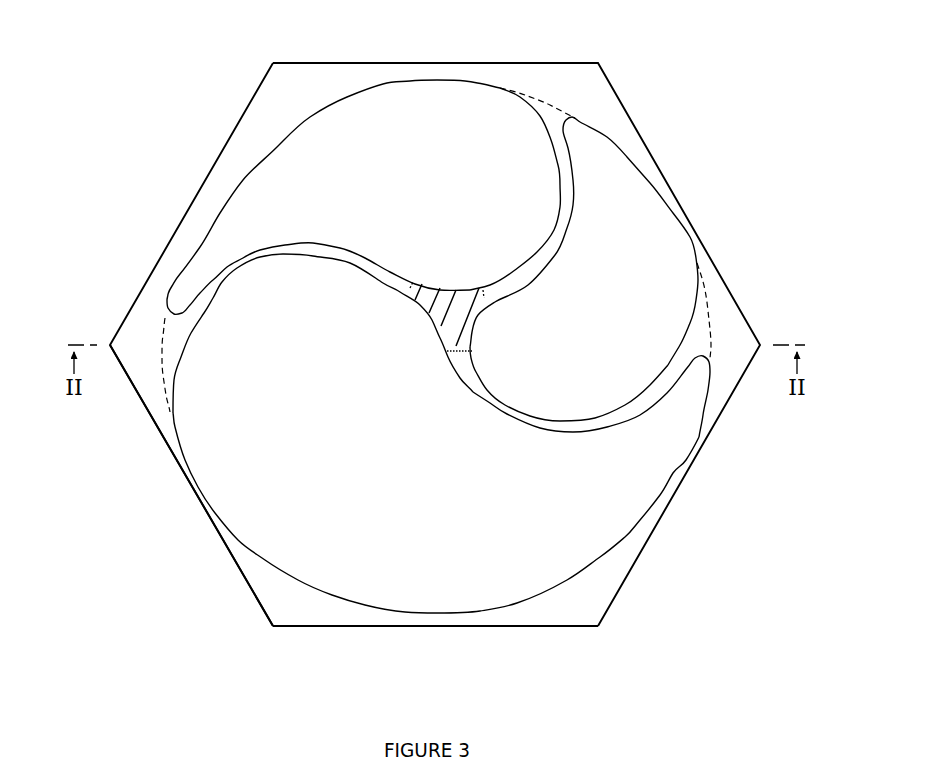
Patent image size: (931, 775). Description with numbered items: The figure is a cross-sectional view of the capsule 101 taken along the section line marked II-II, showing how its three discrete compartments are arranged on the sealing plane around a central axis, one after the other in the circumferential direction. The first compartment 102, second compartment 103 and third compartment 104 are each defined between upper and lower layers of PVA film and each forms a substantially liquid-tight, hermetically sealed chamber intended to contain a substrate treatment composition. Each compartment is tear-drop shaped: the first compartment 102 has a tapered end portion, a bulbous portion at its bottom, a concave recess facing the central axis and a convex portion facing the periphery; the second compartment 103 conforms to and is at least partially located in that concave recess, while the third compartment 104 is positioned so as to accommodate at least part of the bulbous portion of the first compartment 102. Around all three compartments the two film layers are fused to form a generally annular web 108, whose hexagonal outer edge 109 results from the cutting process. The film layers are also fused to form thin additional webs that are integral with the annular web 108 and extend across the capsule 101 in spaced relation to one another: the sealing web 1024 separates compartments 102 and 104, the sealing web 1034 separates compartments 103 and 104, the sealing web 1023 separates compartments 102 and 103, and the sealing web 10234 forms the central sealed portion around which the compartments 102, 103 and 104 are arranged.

The capsule 101 is at (400, 349).
The first compartment 102 is at (436, 513).
The second compartment 103 is at (630, 243).
The third compartment 104 is at (334, 187).
The annular web 108 is at (297, 612).
The hexagonal outer edge 109 is at (214, 526).
The sealing web 1023 is at (613, 418).
The sealing web 1024 is at (313, 250).
The sealing web 1034 is at (557, 230).
The central sealed portion 10234 is at (453, 321).